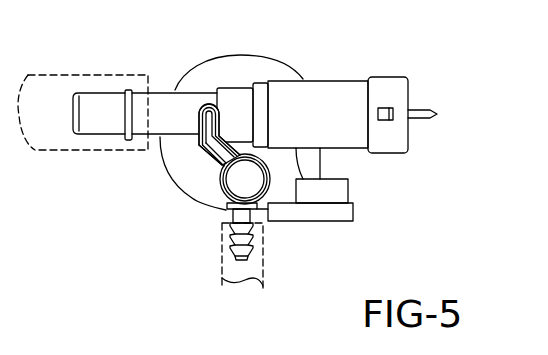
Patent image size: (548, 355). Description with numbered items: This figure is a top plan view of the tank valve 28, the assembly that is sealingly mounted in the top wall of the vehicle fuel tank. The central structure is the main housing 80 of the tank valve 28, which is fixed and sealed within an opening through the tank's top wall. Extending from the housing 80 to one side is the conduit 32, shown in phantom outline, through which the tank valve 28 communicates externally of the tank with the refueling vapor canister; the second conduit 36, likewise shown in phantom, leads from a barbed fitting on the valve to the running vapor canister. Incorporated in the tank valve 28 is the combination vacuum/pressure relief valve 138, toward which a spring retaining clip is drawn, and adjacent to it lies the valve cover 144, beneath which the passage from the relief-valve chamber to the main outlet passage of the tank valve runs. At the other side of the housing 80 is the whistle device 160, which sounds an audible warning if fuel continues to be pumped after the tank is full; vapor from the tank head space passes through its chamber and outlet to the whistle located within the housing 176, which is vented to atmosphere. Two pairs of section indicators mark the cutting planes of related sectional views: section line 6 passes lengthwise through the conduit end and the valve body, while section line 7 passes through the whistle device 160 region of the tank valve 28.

The tank valve 28 is at (362, 28).
The conduit 32 is at (80, 80).
The second conduit 36 is at (222, 277).
The housing 80 is at (233, 97).
The combination vacuum/pressure relief valve 138 is at (217, 195).
The valve cover 144 is at (215, 153).
The whistle device 160 is at (422, 208).
The housing 176 is at (350, 192).
The section line 6- 6 is at (87, 113).
The section line 7- 7 is at (280, 118).